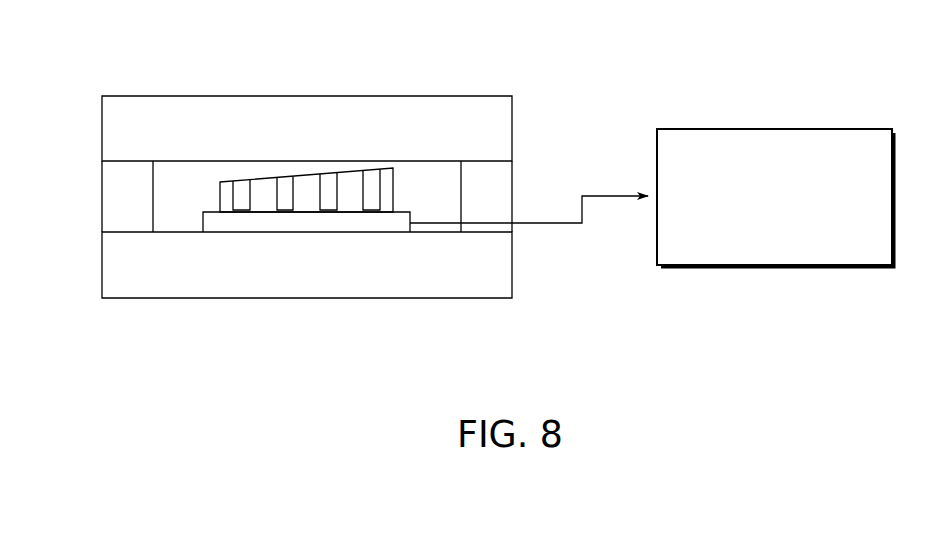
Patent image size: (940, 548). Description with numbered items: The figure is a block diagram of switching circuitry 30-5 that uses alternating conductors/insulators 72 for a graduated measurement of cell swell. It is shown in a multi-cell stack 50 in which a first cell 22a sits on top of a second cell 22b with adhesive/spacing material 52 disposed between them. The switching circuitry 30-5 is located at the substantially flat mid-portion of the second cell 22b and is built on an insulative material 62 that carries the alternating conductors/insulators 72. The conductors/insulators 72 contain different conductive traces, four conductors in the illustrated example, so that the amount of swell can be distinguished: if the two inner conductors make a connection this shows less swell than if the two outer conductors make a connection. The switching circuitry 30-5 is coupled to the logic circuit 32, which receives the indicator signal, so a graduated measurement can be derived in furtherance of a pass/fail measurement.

The multi-cell stack 50 is at (606, 52).
The first cell 22a is at (512, 127).
The second cell 22b is at (512, 265).
The adhesive/spacing material 52 is at (102, 196).
The insulative material 62 is at (203, 222).
The alternating conductors/insulators 72 is at (327, 164).
The switching circuitry 30-5 is at (408, 196).
The logic circuit 32 is at (833, 129).